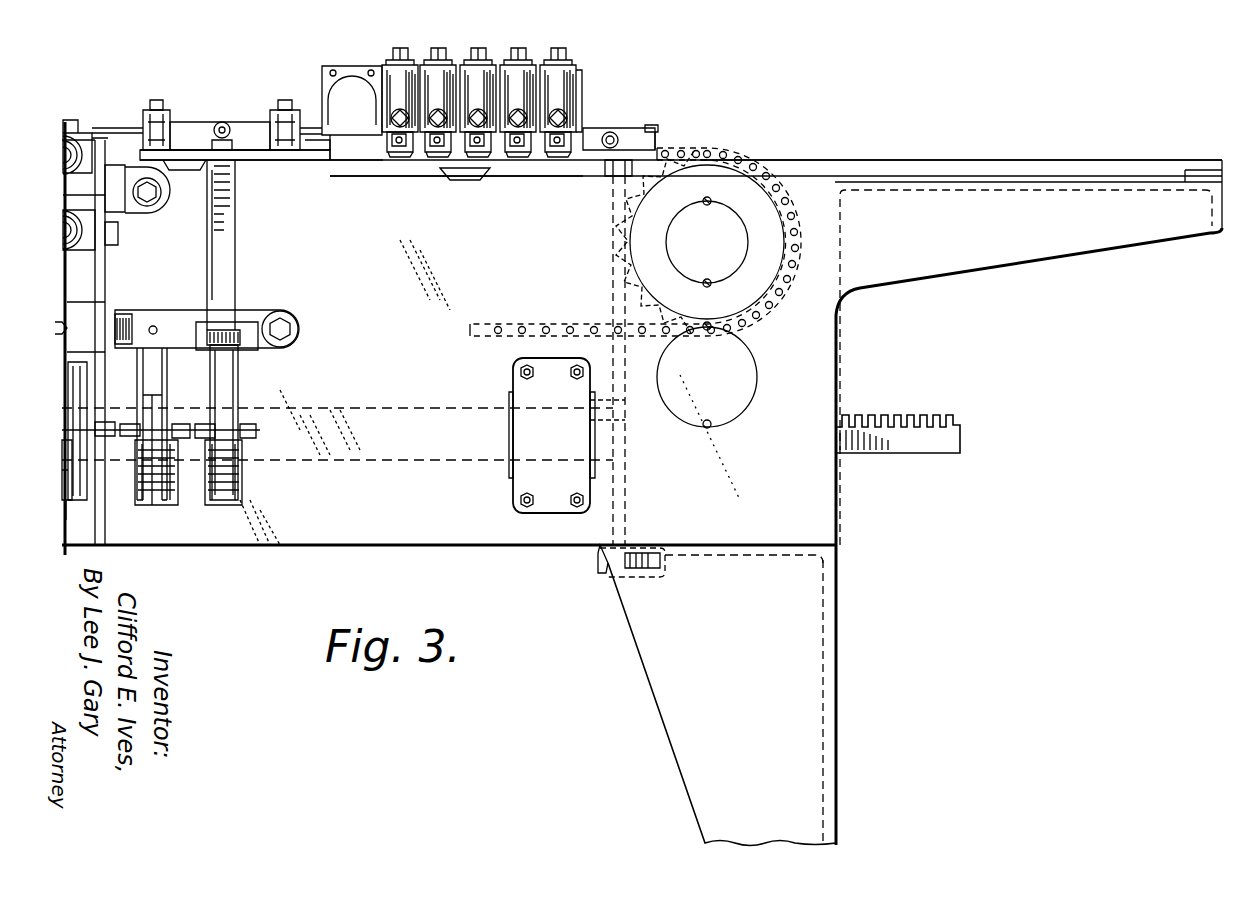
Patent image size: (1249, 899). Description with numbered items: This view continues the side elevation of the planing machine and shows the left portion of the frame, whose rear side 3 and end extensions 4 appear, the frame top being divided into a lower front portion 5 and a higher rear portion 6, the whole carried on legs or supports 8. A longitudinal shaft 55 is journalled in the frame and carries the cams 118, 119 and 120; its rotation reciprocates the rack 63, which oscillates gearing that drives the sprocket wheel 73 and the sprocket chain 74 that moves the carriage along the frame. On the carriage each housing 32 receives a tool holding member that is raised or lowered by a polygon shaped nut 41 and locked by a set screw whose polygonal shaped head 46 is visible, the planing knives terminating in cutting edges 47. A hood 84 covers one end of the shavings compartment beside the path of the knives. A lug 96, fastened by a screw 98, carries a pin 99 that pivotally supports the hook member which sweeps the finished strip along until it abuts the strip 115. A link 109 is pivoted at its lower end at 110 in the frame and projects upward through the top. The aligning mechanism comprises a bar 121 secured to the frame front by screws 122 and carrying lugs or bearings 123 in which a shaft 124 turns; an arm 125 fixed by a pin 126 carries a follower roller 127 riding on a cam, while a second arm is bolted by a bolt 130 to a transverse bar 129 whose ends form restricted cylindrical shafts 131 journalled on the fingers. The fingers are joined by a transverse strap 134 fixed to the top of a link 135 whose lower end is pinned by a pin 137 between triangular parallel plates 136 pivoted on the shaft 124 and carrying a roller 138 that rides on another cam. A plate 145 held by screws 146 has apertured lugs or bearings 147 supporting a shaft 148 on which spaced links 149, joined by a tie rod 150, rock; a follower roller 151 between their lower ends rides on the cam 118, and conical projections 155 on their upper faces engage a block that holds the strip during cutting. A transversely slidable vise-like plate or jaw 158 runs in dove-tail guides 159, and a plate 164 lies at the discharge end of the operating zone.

The rear side 3 is at (818, 510).
The end extension 4 is at (1082, 240).
The front portion of top 5 is at (1072, 186).
The rear portion of top 6 is at (1002, 160).
The legs or supports 8 is at (655, 673).
The housing 32 is at (560, 92).
The polygon shaped nut 41 is at (570, 65).
The polygonal shaped head 46 is at (392, 116).
The cutting edges 47 is at (515, 160).
The shaft 55 is at (395, 415).
The rack 63 is at (912, 415).
The sprocket wheel 73 is at (617, 232).
The sprocket chain 74 is at (725, 152).
The hood 84 is at (342, 90).
The lug 96 is at (626, 134).
The screw 98 is at (612, 132).
The pin 99 is at (656, 126).
The link 109 is at (626, 497).
The pivot 110 is at (648, 552).
The strip 115 is at (1198, 170).
The cam 118 is at (72, 500).
The cam 119 is at (150, 500).
The cam 120 is at (244, 490).
The bar 121 is at (292, 316).
The screws 122 is at (298, 328).
The lugs or bearings 123 is at (125, 314).
The shaft 124 is at (268, 310).
The arm 125 is at (160, 345).
The pin 126 is at (155, 324).
The follower roller 127 is at (150, 506).
The transverse bar 129 is at (180, 120).
The bolt 130 is at (224, 122).
The restricted cylindrical shafts 131 is at (305, 126).
The transverse strap 134 is at (265, 162).
The link 135 is at (236, 222).
The parallel plates 136 is at (238, 392).
The pin 137 is at (250, 322).
The roller 138 is at (240, 445).
The plate 145 is at (150, 206).
The screws 146 is at (147, 200).
The apertured lugs or bearings 147 is at (118, 212).
The shaft 148 is at (80, 152).
The spaced links 149 is at (96, 270).
The tie rod 150 is at (96, 253).
The follower roller 151 is at (84, 460).
The conical projection 155 is at (112, 146).
The vise-like plate or jaw 158 is at (330, 180).
The dove-tail guides 159 is at (185, 172).
The plate 164 is at (445, 182).